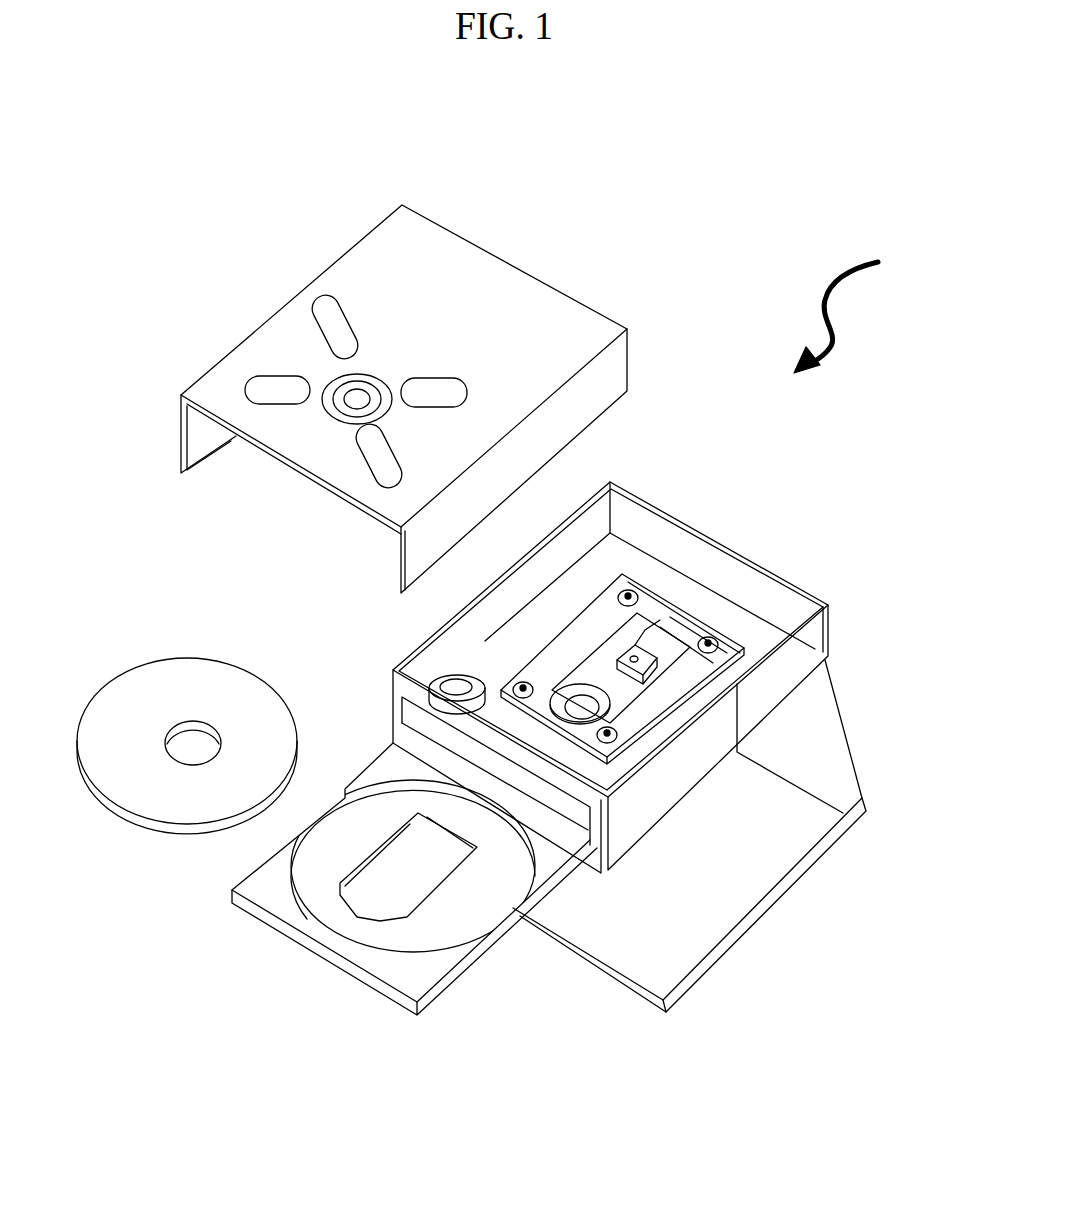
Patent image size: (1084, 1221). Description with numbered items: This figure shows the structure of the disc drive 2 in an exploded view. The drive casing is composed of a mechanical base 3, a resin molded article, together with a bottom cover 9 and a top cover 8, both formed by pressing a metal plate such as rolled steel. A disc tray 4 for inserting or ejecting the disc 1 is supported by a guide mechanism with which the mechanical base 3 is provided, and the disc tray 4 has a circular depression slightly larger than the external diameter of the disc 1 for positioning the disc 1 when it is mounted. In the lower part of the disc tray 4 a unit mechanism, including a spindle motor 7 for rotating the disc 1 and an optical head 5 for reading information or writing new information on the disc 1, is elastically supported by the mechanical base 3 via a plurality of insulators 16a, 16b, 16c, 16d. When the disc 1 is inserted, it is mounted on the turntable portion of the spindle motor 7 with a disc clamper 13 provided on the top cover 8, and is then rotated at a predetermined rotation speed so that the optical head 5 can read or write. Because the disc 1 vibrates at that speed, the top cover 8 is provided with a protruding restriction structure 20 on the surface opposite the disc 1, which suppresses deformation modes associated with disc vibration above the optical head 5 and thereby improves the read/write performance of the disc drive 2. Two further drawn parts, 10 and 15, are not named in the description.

The disc 1 is at (134, 678).
The disc drive 2 is at (850, 309).
The mechanical base 3 is at (677, 587).
The disc tray 4 is at (341, 915).
The optical head 5 is at (657, 620).
The spindle motor 7 is at (602, 765).
The top cover 8 is at (525, 283).
The bottom cover 9 is at (706, 921).
The front opening 10 is at (586, 856).
The disc clamper 13 is at (335, 393).
The support member 15 is at (745, 692).
The insulator 16a is at (630, 584).
The insulator 16b is at (720, 648).
The insulator 16c is at (612, 744).
The insulator 16d is at (521, 688).
The protruding restriction structure 20 is at (262, 385).